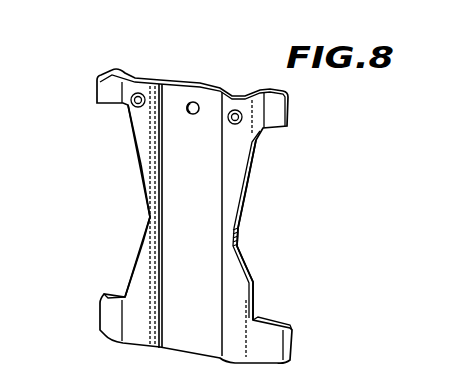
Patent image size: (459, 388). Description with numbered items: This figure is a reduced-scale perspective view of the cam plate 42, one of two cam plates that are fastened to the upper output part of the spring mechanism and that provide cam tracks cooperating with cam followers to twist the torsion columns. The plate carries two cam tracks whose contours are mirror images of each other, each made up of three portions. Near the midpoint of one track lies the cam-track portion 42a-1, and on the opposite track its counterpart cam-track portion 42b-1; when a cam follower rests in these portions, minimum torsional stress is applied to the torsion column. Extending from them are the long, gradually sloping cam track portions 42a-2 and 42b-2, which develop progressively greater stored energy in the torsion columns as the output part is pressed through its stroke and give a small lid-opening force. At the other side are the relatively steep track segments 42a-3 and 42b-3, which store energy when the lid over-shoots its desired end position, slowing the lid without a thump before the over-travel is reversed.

The cam plate 42 is at (200, 79).
The cam-track portion 42a-1 is at (147, 217).
The cam track portion 42a-2 is at (138, 150).
The track segment 42a-3 is at (138, 267).
The cam-track portion 42b-1 is at (243, 233).
The cam track segment 42b-2 is at (254, 158).
The track segment 42b-3 is at (253, 282).